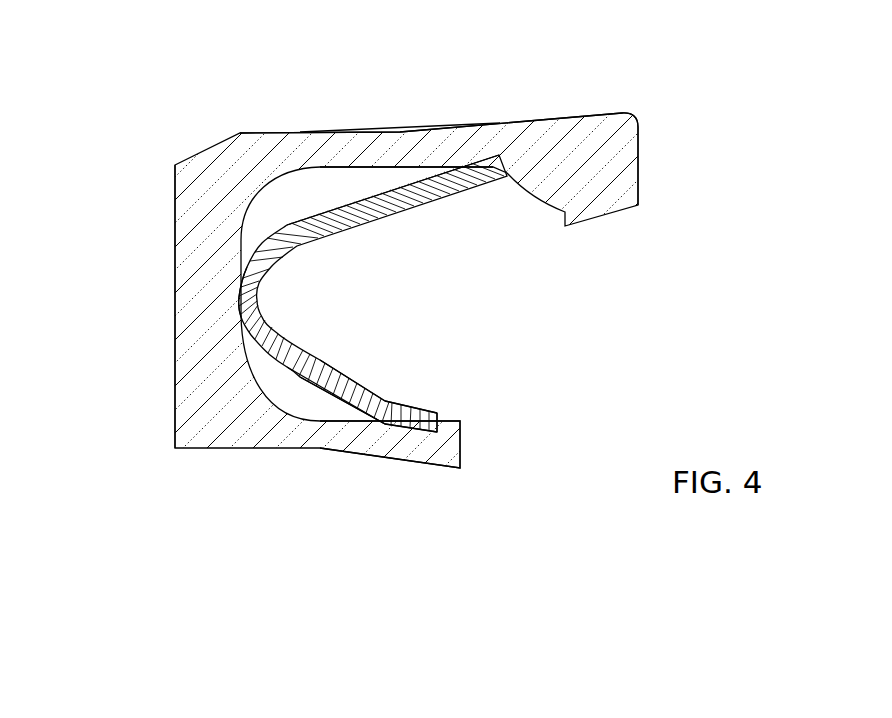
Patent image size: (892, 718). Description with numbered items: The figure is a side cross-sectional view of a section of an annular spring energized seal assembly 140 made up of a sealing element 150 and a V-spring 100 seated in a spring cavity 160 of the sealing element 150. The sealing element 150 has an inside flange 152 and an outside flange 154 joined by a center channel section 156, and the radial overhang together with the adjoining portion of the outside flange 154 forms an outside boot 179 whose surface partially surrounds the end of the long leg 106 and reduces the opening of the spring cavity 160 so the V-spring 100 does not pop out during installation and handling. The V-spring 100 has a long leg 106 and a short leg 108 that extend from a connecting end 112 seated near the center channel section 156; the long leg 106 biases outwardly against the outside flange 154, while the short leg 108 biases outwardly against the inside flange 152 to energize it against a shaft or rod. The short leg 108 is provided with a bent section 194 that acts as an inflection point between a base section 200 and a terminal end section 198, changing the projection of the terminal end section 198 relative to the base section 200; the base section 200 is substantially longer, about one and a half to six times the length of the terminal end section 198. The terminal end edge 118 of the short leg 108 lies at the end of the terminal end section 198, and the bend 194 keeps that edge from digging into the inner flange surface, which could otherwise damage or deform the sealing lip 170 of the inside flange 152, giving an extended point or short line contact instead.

The V-spring 100 is at (369, 221).
The long leg 106 is at (340, 215).
The short leg 108 is at (302, 370).
The connecting end 112 is at (243, 298).
The terminal end edge 118 is at (438, 417).
The spring energized seal assembly 140 is at (458, 97).
The sealing element 150 is at (172, 193).
The inside flange 152 is at (362, 448).
The outside flange 154 is at (402, 143).
The center channel section 156 is at (203, 243).
The spring cavity 160 is at (477, 292).
The sealing lip 170 is at (427, 435).
The outside boot 179 is at (602, 135).
The bent section 194 is at (398, 403).
The terminal end section 198 is at (420, 403).
The base section 200 is at (330, 395).